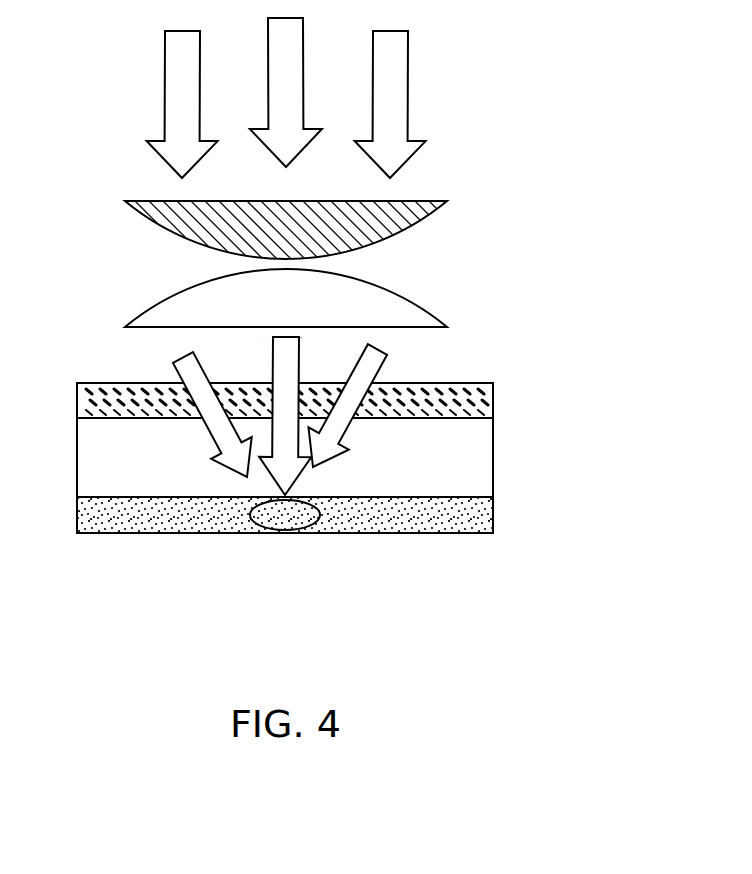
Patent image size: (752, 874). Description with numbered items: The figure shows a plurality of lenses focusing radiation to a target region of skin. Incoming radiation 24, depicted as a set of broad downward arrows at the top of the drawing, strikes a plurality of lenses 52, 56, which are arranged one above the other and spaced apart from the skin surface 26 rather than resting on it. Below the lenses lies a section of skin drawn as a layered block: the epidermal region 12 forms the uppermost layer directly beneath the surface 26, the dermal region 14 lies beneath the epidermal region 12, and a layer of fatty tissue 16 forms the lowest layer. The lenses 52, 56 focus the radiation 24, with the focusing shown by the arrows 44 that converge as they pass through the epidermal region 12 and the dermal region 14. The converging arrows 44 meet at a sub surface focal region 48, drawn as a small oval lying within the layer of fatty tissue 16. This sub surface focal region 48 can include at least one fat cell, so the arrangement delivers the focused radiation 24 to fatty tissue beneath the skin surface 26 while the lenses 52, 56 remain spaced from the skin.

The radiation 24 is at (409, 42).
The lens 52 is at (430, 227).
The lens 56 is at (423, 302).
The surface 26 is at (475, 380).
The epidermal region 12 is at (475, 402).
The dermal region 14 is at (475, 473).
The layer of fatty tissue 16 is at (77, 512).
The arrows 44 is at (187, 363).
The sub surface focal region 48 is at (250, 530).